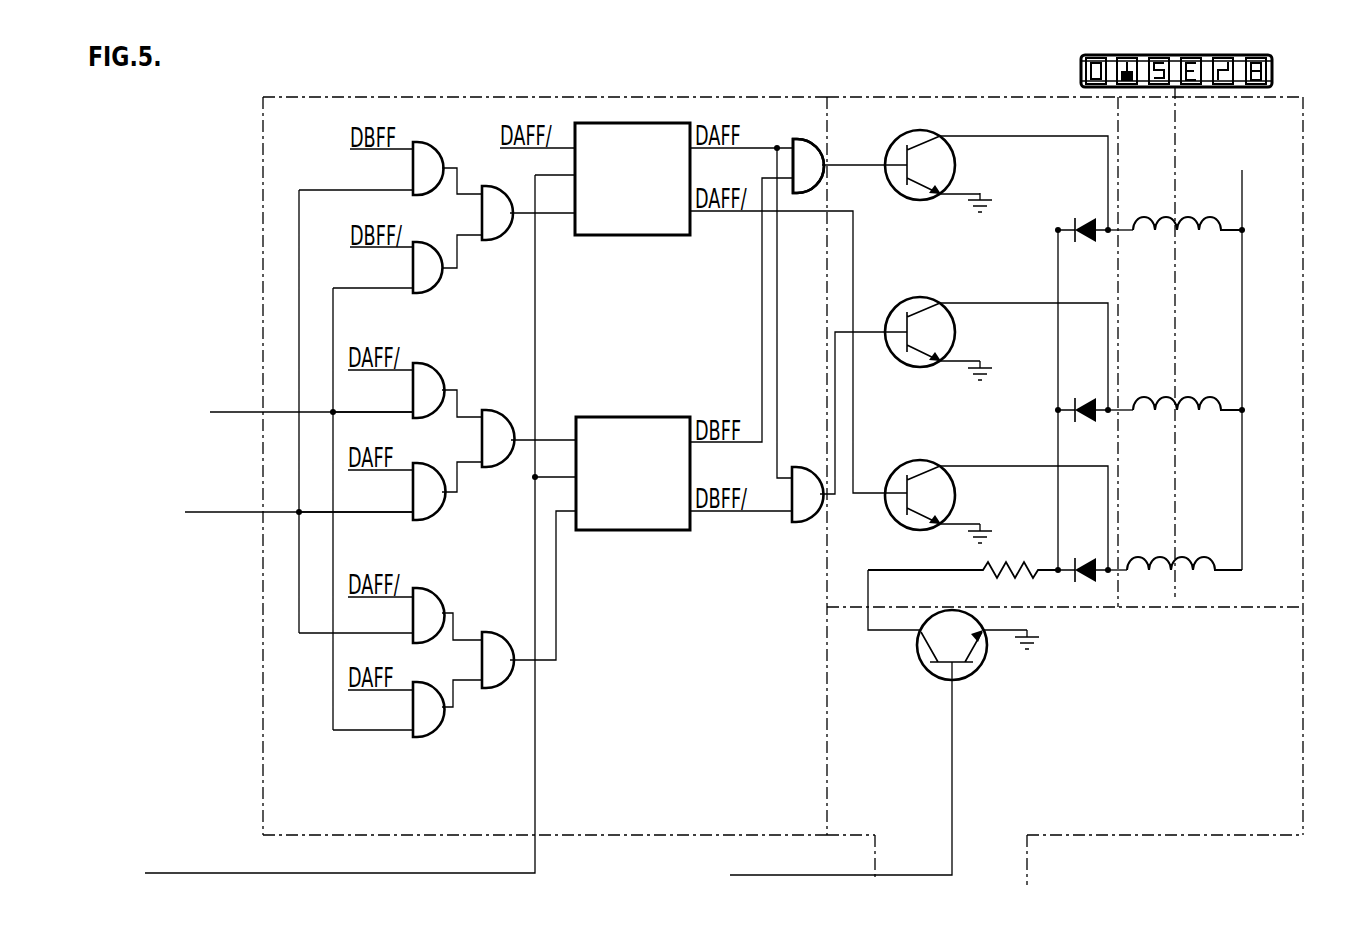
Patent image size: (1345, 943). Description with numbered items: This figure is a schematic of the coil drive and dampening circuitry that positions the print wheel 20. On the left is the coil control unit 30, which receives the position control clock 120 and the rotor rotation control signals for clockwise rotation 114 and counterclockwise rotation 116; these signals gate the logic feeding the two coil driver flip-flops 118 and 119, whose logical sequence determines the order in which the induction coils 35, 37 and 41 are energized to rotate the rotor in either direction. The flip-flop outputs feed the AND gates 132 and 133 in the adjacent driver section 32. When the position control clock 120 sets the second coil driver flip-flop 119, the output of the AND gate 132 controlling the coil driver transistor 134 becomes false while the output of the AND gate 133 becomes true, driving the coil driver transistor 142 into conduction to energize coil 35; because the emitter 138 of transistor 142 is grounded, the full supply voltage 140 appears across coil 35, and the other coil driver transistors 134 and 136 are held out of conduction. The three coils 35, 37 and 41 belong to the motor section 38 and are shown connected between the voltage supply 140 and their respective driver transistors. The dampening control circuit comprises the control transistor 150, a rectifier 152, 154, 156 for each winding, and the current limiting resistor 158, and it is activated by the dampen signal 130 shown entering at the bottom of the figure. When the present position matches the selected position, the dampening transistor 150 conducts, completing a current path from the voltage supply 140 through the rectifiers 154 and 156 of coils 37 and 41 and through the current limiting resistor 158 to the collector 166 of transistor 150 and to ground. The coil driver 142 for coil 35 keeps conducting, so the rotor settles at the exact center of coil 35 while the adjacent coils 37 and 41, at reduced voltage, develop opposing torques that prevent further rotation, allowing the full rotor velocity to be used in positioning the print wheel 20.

The print wheel 20 is at (1274, 73).
The coil control unit 30 is at (645, 96).
The driver circuit 32 is at (993, 97).
The induction coil 35 is at (1200, 222).
The induction coil 37 is at (1202, 402).
The stepping motor 38 is at (1302, 718).
The induction coil 41 is at (1197, 565).
The CW signal 114 is at (222, 383).
The CCW signal 116 is at (204, 490).
The coil driver flip-flop DAFF 118 is at (678, 236).
The coil driver flip-flop DBFF 119 is at (665, 531).
The position control clock 120 is at (535, 749).
The dampen line 130 is at (953, 773).
The AND gate 132 is at (795, 525).
The AND gate 133 is at (803, 138).
The coil driver transistor 134 is at (923, 369).
The coil driver transistor 136 is at (897, 525).
The emitter 138 is at (969, 193).
The voltage VBB 140 is at (1256, 151).
The coil driver transistor 142 is at (886, 142).
The control transistor 150 is at (970, 679).
The rectifier 152 is at (1082, 216).
The rectifier 154 is at (1083, 400).
The rectifier 156 is at (1083, 563).
The current limiting resistor 158 is at (1012, 561).
The collector 166 is at (885, 631).